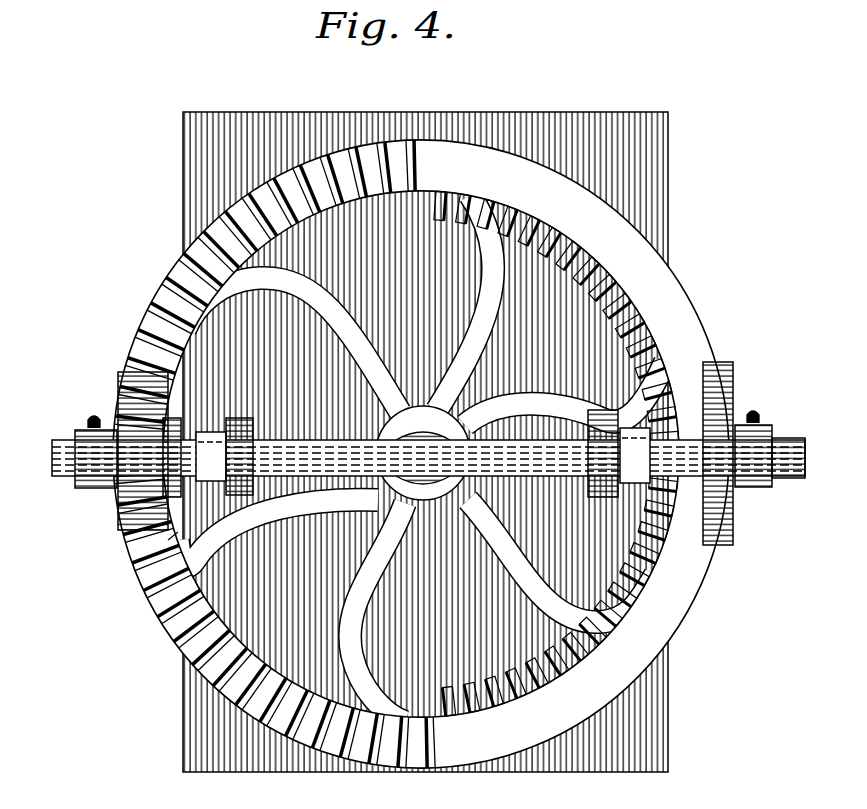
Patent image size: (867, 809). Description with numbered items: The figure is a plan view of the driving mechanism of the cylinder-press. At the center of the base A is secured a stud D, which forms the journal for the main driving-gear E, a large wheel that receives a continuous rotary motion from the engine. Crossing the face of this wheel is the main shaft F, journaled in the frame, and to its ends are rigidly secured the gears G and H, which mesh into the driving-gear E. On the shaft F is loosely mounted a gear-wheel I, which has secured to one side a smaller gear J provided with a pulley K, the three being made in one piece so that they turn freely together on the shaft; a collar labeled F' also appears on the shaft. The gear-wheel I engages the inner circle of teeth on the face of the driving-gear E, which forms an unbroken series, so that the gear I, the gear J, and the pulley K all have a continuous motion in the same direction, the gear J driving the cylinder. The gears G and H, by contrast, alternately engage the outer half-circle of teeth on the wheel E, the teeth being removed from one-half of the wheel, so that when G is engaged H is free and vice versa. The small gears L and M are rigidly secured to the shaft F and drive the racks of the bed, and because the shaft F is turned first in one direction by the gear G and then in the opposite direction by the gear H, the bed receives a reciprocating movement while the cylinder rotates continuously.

The base A is at (425, 442).
The main driving-gear E is at (104, 408).
The stud D is at (431, 441).
The main shaft F is at (413, 452).
The shaft collar F' is at (560, 456).
The gear G is at (118, 500).
The gear H is at (728, 530).
The gear-wheel I is at (163, 546).
The smaller gear J is at (178, 424).
The pulley K is at (208, 432).
The small gear L is at (240, 418).
The small gear M is at (605, 405).